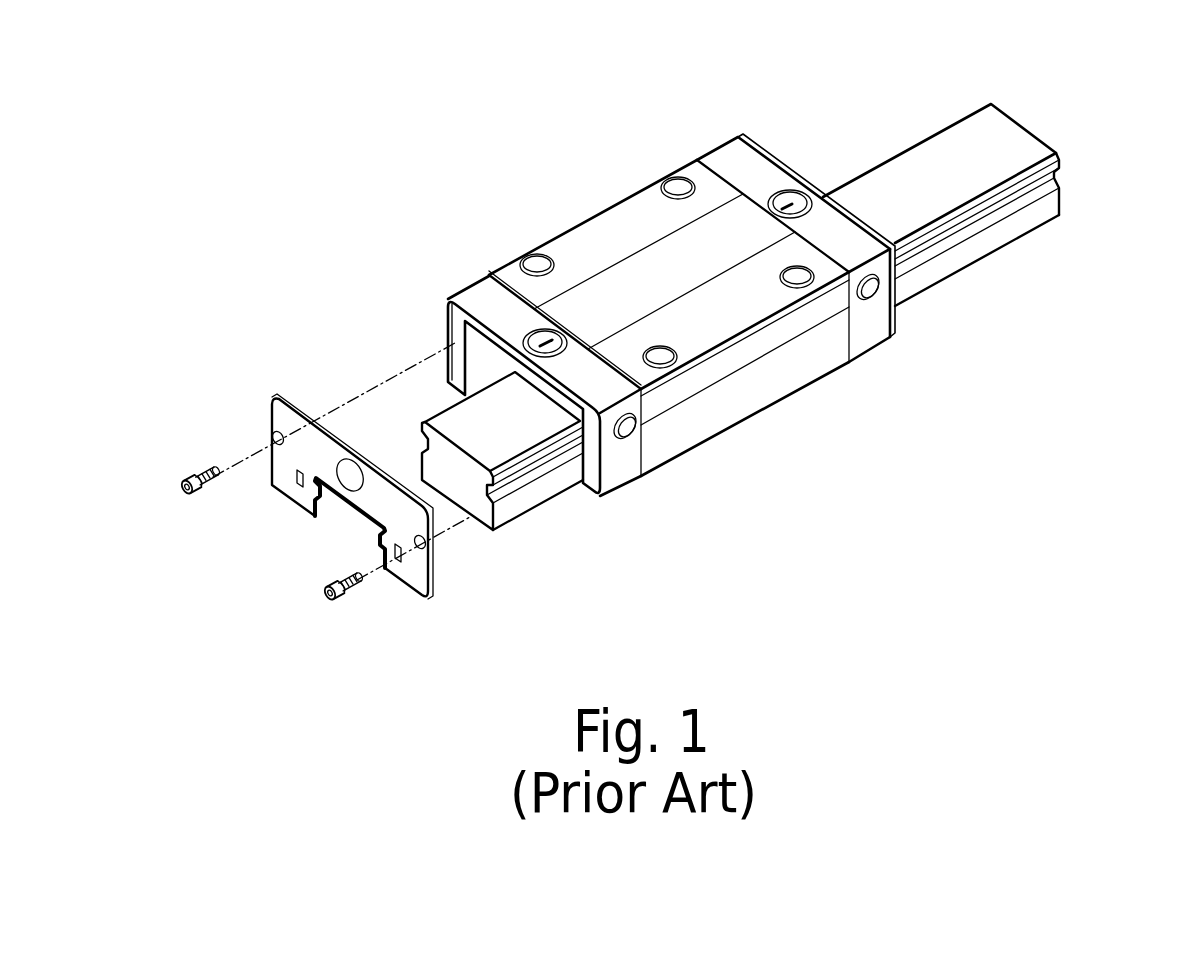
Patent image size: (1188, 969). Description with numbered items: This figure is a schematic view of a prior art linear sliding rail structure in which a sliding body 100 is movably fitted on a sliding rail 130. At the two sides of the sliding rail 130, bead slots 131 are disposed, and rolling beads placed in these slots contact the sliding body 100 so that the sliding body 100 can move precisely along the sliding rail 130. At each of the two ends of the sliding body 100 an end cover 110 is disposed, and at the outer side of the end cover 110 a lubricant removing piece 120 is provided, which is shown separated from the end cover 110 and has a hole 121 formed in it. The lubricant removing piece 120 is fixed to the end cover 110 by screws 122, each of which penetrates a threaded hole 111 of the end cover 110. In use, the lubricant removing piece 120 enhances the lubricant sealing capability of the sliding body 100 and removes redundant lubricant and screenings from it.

The sliding body 100 is at (603, 245).
The end cover 110 is at (483, 297).
The threaded hole 111 is at (458, 327).
The lubricant removing piece 120 is at (280, 408).
The hole 121 is at (436, 549).
The screw 122 is at (183, 477).
The sliding rail 130 is at (980, 160).
The bead slot 131 is at (1060, 157).